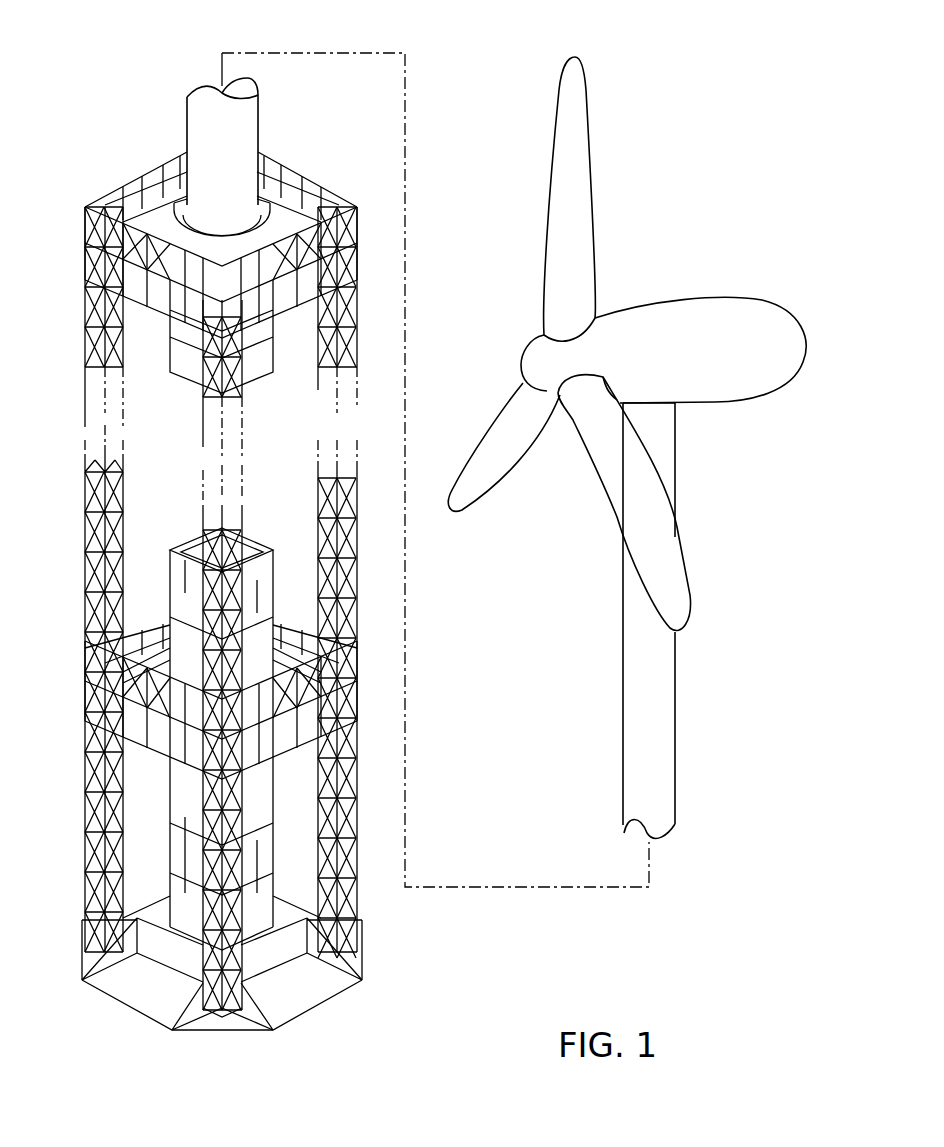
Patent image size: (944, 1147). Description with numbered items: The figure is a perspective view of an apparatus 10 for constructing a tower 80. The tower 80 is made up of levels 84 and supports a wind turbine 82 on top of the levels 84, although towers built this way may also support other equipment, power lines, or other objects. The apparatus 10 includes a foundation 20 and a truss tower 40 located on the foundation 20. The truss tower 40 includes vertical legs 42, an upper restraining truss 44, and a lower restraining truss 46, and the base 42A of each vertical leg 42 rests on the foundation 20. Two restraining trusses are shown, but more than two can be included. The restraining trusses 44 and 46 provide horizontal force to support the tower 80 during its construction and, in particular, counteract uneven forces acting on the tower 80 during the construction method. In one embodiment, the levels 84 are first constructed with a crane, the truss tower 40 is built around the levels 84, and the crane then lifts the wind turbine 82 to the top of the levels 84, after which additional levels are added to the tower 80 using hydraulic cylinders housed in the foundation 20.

The apparatus 10 is at (141, 108).
The foundation 20 is at (297, 993).
The truss tower 40 is at (72, 296).
The vertical legs 42 is at (92, 607).
The base 42A is at (224, 1028).
The upper restraining truss 44 is at (305, 184).
The lower restraining truss 46 is at (357, 653).
The tower 80 is at (281, 355).
The wind turbine 82 is at (713, 302).
The levels 84 is at (268, 590).